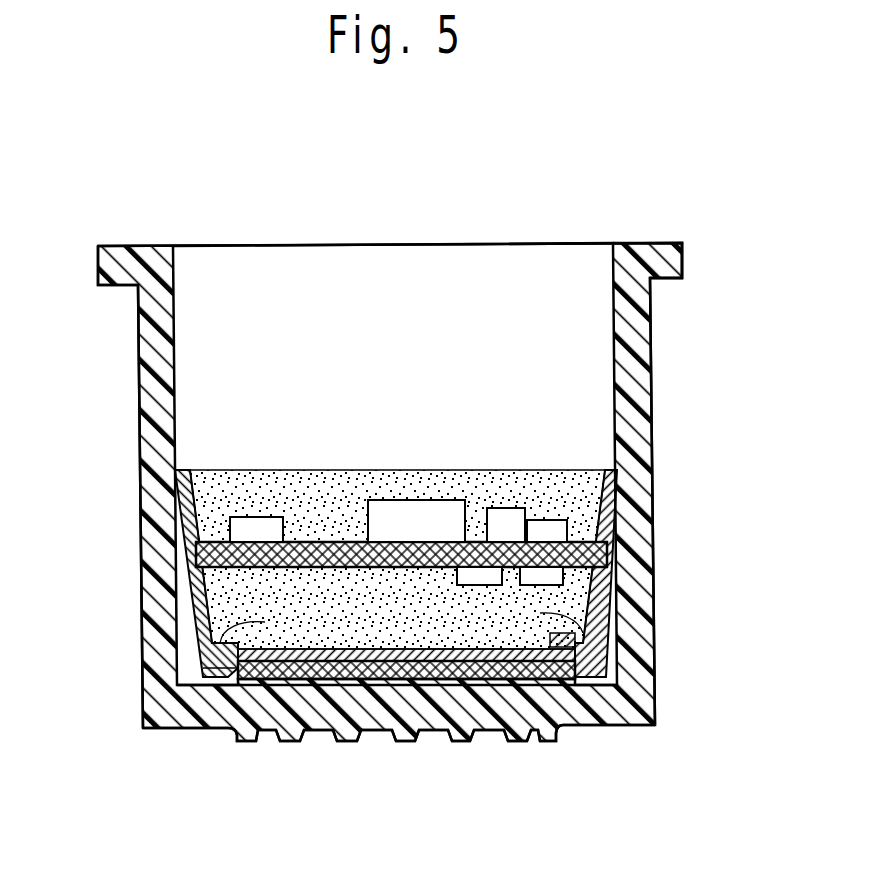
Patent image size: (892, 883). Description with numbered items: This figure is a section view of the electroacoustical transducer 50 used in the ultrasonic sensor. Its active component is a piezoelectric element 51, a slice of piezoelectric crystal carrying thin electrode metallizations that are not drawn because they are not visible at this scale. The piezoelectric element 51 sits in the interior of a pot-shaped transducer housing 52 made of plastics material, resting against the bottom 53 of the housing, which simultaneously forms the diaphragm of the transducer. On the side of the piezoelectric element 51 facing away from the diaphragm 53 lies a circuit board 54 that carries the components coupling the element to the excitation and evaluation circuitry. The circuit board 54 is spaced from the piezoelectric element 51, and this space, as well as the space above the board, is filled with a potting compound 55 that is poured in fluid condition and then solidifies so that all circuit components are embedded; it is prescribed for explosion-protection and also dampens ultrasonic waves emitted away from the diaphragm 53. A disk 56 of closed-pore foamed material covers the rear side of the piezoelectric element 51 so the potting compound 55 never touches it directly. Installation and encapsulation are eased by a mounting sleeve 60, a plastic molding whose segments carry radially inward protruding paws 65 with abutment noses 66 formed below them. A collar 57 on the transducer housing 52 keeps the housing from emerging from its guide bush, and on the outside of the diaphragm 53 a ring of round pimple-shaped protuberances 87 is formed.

The electroacoustical transducer 50 is at (167, 197).
The piezoelectric element 51 is at (453, 667).
The transducer housing 52 is at (652, 367).
The bottom 53 is at (338, 743).
The circuit board 54 is at (607, 552).
The potting compound 55 is at (472, 478).
The disk of closed-pore foamed material 56 is at (393, 648).
The collar 57 is at (683, 244).
The mounting sleeve 60 is at (178, 549).
The paw 65 is at (240, 620).
The abutment nose 66 is at (205, 663).
The protuberances 87 is at (247, 742).